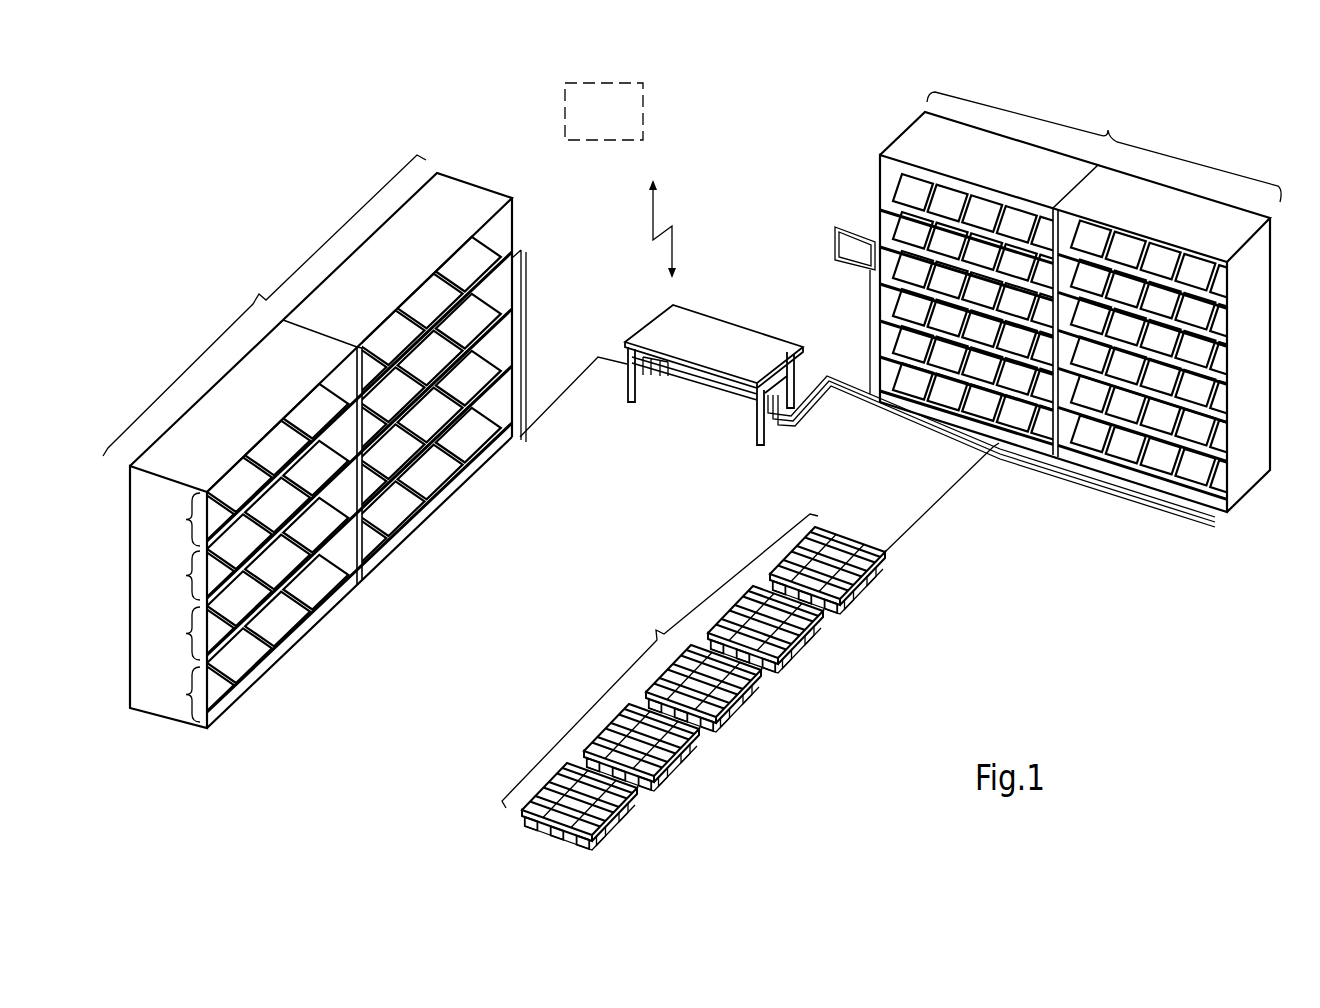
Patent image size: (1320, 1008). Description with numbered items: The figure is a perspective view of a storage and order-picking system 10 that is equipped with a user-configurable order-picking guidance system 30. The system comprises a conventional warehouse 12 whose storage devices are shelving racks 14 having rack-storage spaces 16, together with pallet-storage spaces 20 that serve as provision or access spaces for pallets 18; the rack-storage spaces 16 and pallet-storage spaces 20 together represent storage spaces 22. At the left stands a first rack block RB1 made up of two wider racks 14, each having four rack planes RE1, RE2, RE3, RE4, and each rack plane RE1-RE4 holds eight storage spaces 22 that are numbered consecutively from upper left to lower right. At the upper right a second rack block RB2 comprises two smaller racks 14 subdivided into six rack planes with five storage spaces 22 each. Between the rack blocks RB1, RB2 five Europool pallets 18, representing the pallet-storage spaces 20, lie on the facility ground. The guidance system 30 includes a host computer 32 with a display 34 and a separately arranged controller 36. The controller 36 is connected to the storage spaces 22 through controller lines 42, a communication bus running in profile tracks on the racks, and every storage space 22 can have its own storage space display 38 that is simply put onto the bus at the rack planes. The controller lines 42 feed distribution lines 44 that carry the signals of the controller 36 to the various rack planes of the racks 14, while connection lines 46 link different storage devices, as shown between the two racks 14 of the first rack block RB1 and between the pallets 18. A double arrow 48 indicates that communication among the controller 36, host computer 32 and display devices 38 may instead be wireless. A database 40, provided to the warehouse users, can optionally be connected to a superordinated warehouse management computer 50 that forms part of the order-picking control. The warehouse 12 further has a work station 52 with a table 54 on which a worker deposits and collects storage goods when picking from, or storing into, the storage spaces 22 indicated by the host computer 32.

The storage and order-picking system 10 is at (233, 223).
The warehouse 12 is at (607, 553).
The rack 14 is at (468, 182).
The rack-storage space 16 is at (457, 253).
The pallet 18 is at (832, 531).
The pallet-storage space 20 is at (875, 543).
The storage space 22 is at (692, 450).
The guidance system 30 is at (795, 248).
The host computer 32 is at (845, 266).
The display 34 is at (848, 226).
The controller 36 is at (768, 412).
The storage space display 38 is at (312, 638).
The database 40 is at (648, 375).
The controller line 42 is at (563, 406).
The distribution line 44 is at (527, 337).
The connection line 46 is at (830, 607).
The double arrow 48 is at (676, 237).
The warehouse management computer 50 is at (590, 125).
The work station 52 is at (752, 330).
The table 54 is at (700, 359).
The first rack block RB1 is at (123, 387).
The second rack block RB2 is at (1232, 158).
The rack plane RE1 is at (173, 519).
The rack plane RE2 is at (173, 575).
The rack plane RE3 is at (173, 633).
The rack plane RE4 is at (173, 694).